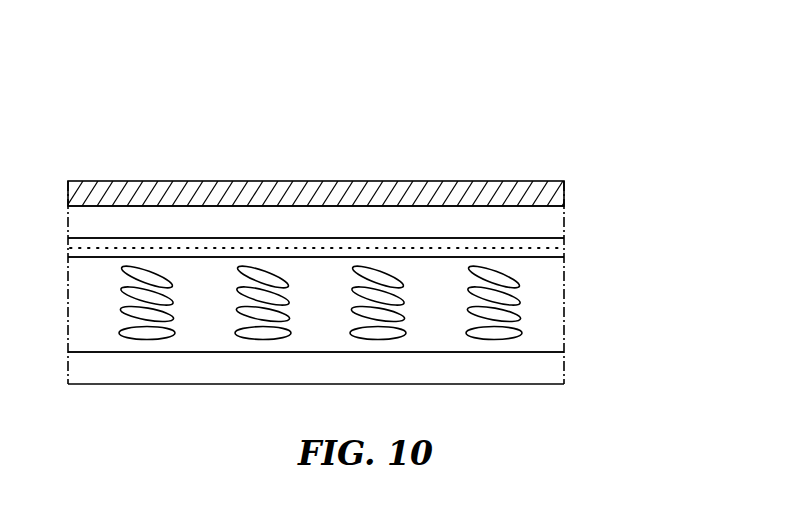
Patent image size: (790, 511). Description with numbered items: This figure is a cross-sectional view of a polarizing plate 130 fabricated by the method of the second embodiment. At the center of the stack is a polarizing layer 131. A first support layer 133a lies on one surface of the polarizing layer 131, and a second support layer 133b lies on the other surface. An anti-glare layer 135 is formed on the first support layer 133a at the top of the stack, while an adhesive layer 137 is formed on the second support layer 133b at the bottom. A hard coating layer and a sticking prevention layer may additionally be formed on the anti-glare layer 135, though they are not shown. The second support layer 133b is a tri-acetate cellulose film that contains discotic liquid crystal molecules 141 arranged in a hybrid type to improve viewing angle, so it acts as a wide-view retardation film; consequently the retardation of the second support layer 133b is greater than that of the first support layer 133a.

The polarizing plate 130 is at (364, 235).
The anti-glare layer 135 is at (558, 191).
The first support layer 133a is at (552, 217).
The polarizing layer 131 is at (560, 245).
The discotic liquid crystal molecules 141 is at (508, 280).
The second support layer 133b is at (550, 325).
The adhesive layer 137 is at (560, 370).